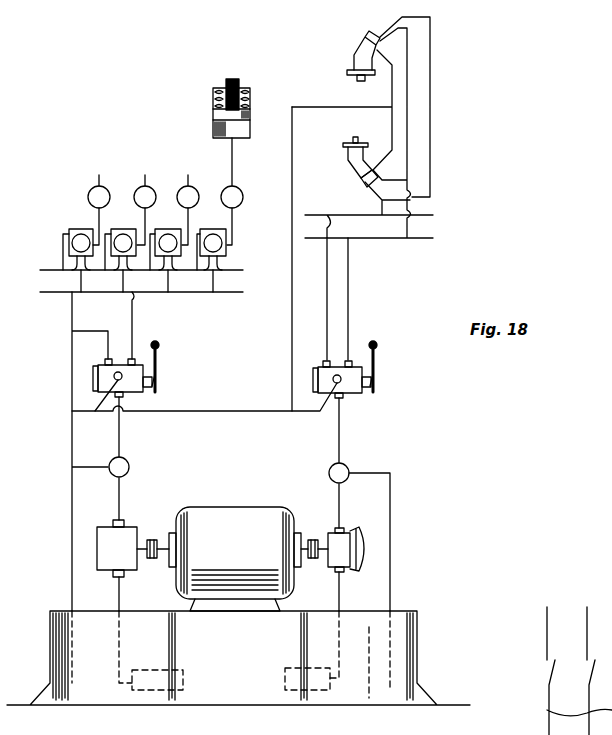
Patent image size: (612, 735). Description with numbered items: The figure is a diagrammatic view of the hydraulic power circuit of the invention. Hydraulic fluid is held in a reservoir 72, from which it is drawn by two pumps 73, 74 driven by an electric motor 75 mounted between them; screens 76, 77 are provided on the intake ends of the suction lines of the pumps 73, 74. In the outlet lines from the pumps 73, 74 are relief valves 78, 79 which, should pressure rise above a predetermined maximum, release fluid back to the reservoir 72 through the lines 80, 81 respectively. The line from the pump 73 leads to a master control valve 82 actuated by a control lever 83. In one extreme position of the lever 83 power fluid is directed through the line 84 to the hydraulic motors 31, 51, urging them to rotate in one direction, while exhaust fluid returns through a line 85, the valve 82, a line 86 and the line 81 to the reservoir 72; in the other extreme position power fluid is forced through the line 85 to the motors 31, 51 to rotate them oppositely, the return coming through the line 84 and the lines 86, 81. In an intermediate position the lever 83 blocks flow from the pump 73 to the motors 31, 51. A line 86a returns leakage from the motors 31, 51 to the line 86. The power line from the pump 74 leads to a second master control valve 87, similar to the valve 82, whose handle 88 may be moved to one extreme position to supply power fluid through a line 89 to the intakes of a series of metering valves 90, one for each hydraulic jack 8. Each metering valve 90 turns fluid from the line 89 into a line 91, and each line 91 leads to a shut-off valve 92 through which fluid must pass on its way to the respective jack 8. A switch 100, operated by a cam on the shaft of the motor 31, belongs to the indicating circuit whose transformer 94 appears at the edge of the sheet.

The hydraulic jack 8 is at (250, 112).
The constant torque hydraulic motor 31 is at (349, 156).
The continuous torque hydraulic motor 51 is at (358, 50).
The reservoir 72 is at (418, 650).
The pump 73 is at (352, 553).
The pump 74 is at (135, 527).
The electric motor 75 is at (243, 507).
The screen 76 is at (298, 692).
The screen 77 is at (165, 692).
The relief valve 78 is at (347, 466).
The relief valve 79 is at (128, 460).
The line 80 is at (391, 496).
The line 81 is at (72, 492).
The master control valve 82 is at (360, 393).
The control lever 83 is at (378, 345).
The line 84 is at (349, 273).
The line 85 is at (327, 297).
The line 86 is at (222, 411).
The line 86a is at (292, 318).
The master control valve 87 is at (140, 392).
The handle 88 is at (160, 345).
The line 89 is at (134, 318).
The metering valve 90 is at (78, 229).
The line 91 is at (144, 220).
The shut-off valve 92 is at (170, 190).
The transformer 94 is at (544, 671).
The switch 100 is at (368, 182).